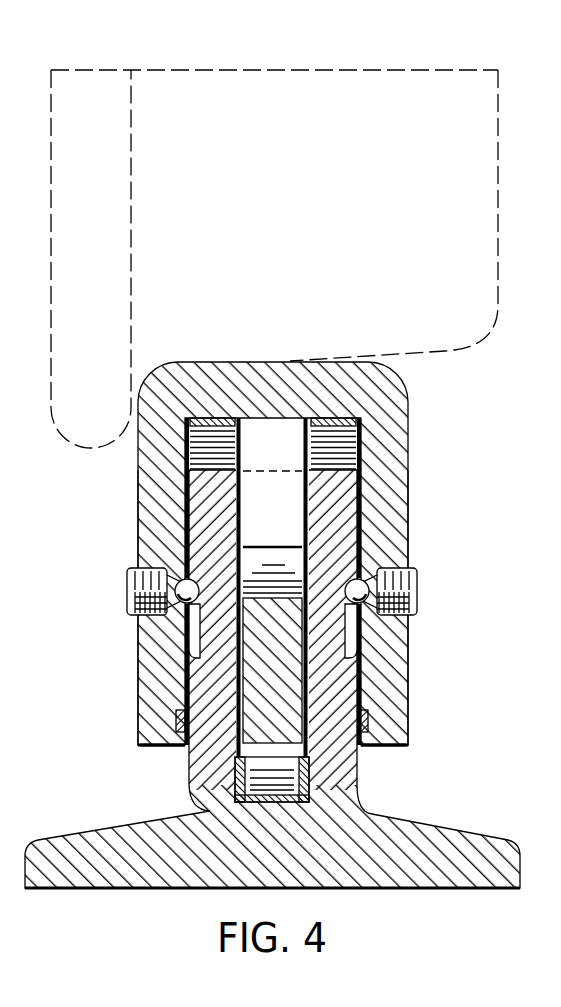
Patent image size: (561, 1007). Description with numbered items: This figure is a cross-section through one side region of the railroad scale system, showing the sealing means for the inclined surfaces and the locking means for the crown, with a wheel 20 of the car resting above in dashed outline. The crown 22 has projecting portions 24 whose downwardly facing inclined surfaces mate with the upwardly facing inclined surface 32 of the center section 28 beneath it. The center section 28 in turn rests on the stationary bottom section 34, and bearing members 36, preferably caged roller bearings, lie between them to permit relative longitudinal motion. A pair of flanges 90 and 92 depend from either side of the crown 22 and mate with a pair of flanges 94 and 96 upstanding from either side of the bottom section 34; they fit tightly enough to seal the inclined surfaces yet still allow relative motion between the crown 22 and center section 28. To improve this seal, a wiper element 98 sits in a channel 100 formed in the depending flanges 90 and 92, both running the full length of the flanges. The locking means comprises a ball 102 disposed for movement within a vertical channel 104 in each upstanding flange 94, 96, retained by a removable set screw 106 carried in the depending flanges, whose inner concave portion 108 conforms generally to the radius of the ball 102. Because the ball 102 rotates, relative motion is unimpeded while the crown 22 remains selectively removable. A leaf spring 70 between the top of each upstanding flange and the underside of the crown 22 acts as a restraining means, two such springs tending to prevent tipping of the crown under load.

The wheels 20 is at (257, 138).
The crown 22 is at (275, 372).
The projecting portions 24 is at (262, 463).
The center section 28 is at (259, 667).
The inclined surface 32 is at (276, 558).
The bottom section 34 is at (105, 822).
The bearing members 36 is at (310, 777).
The leaf spring 70 is at (200, 445).
The depending flange 90 is at (160, 670).
The depending flange 92 is at (385, 670).
The upstanding flange 94 is at (205, 495).
The upstanding flange 96 is at (340, 500).
The wiper element 98 is at (178, 716).
The channel 100 is at (168, 745).
The ball 102 is at (180, 580).
The vertical channel 104 is at (196, 633).
The set screw 106 is at (127, 580).
The concave portion 108 is at (140, 603).